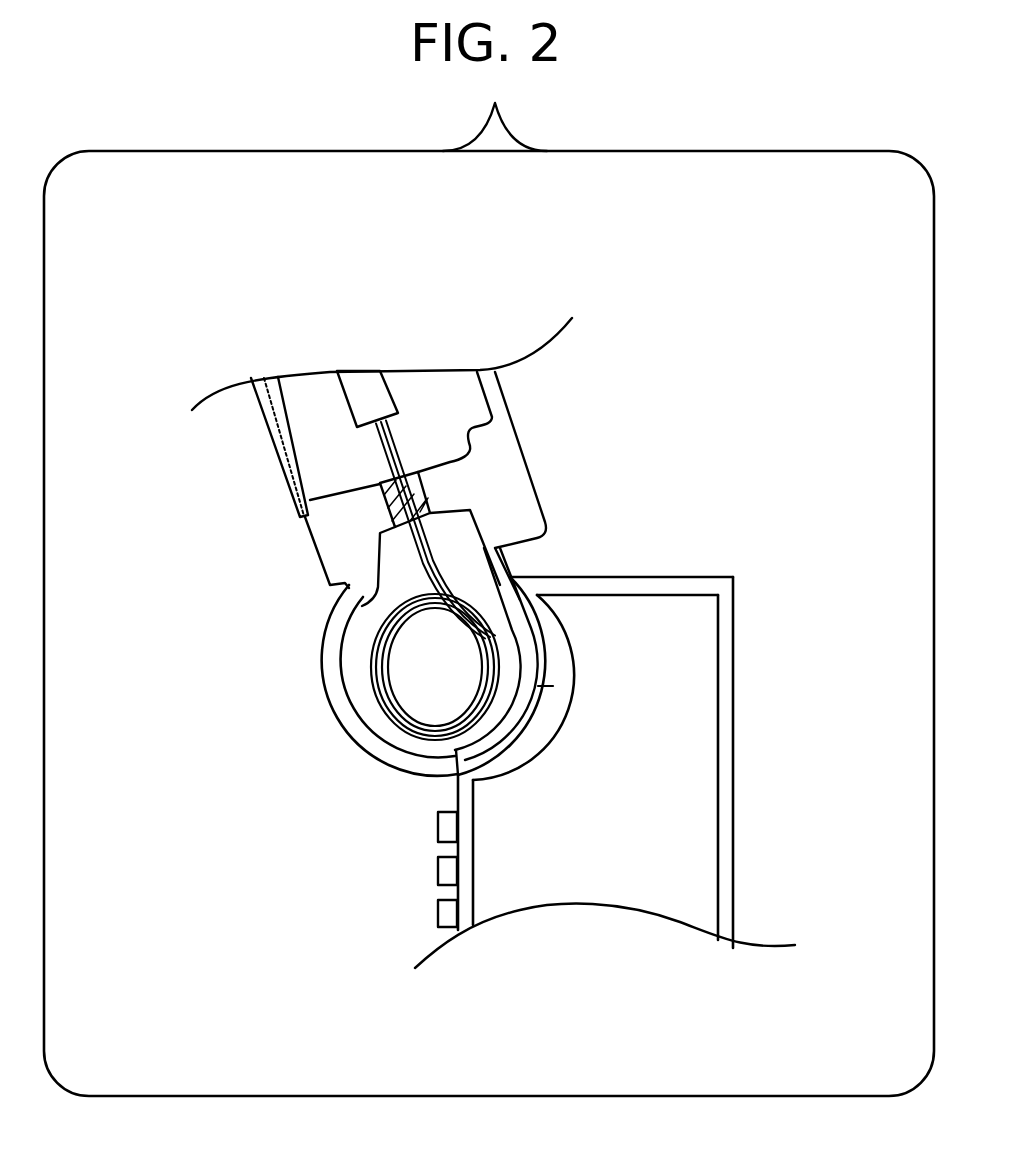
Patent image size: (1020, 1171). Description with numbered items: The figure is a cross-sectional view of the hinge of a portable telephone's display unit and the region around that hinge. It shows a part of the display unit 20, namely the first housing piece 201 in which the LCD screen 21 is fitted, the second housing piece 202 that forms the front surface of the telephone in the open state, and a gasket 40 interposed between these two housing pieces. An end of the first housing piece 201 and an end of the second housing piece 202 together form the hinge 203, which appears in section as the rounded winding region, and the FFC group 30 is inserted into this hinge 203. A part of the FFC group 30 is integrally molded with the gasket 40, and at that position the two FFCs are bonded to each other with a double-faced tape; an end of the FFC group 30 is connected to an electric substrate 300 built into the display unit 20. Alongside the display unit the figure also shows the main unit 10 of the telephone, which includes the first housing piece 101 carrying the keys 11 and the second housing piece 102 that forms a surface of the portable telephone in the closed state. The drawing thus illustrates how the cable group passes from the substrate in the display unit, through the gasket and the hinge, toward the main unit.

The main unit 10 is at (770, 781).
The keys 11 is at (438, 913).
The display unit 20 is at (572, 436).
The LCD screen 21 is at (262, 428).
The FFC group 30 is at (416, 455).
The gasket 40 is at (383, 503).
The first housing piece 101 is at (465, 795).
The second housing piece 102 is at (662, 575).
The first housing piece 201 is at (320, 527).
The second housing piece 202 is at (510, 500).
The hinge 203 is at (310, 718).
The electric substrate 300 is at (367, 390).